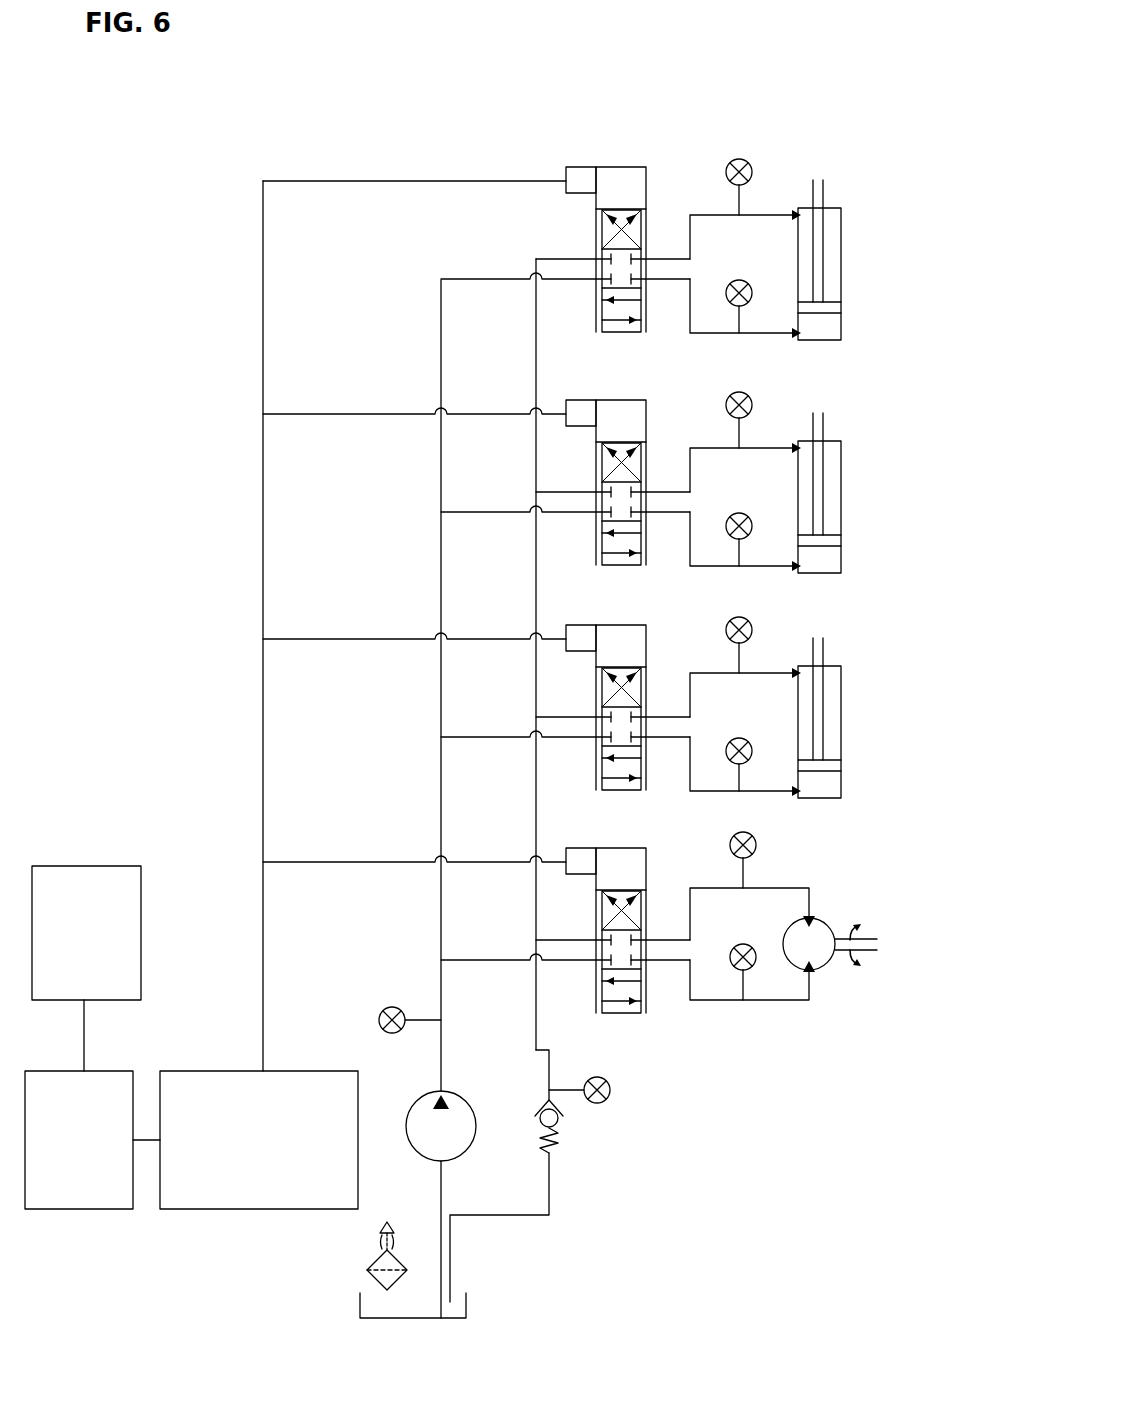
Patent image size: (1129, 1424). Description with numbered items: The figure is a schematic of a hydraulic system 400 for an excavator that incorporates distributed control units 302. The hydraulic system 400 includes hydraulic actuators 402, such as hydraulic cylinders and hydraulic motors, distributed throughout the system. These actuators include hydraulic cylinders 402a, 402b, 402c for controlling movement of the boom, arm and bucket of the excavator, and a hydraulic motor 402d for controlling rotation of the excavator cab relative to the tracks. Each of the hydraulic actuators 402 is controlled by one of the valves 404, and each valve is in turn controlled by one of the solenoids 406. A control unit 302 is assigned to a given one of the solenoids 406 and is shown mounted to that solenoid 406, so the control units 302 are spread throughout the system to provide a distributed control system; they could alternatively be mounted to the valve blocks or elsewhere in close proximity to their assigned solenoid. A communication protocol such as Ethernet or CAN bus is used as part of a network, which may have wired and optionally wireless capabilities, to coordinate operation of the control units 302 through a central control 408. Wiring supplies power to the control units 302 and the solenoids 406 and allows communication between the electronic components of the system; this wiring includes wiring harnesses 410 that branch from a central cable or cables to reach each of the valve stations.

The hydraulic system 400 is at (760, 100).
The wiring harness 410 is at (308, 183).
The control unit 302 is at (627, 579).
The solenoid 406 is at (647, 191).
The valve 404 is at (647, 290).
The hydraulic actuator 402 is at (865, 576).
The hydraulic cylinder 402c is at (842, 306).
The hydraulic cylinder 402b is at (842, 540).
The hydraulic cylinder 402a is at (842, 763).
The hydraulic motor 402d is at (829, 964).
The central control 408 is at (102, 1210).